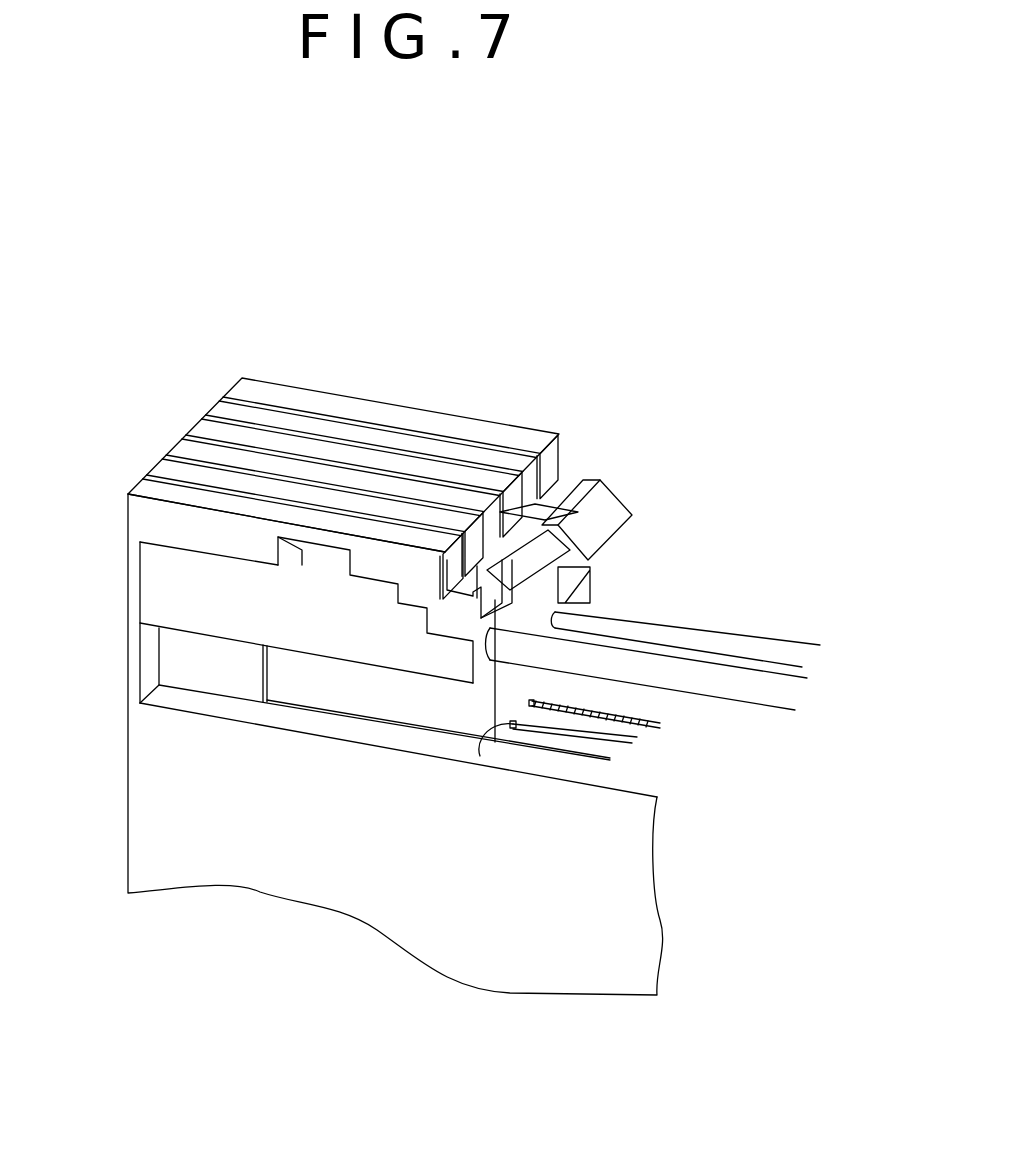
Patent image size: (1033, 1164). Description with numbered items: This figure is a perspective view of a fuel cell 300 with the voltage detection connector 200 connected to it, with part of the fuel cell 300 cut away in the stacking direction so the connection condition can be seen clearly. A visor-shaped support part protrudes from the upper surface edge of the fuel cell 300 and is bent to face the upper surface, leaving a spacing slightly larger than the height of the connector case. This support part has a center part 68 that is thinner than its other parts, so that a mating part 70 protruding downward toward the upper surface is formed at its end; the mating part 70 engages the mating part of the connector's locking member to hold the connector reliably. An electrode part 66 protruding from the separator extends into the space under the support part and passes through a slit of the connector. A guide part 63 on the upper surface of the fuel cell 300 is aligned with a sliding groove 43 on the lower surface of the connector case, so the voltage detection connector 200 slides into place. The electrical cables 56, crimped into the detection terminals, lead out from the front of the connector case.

The fuel cell 300 is at (582, 969).
The center part 68 is at (327, 538).
The mating part 70 is at (423, 560).
The electrode part 66 is at (178, 645).
The voltage detection connector 200 is at (590, 585).
The electrical cables 56 is at (733, 637).
The sliding groove 43 is at (530, 706).
The guide part 63 is at (514, 728).